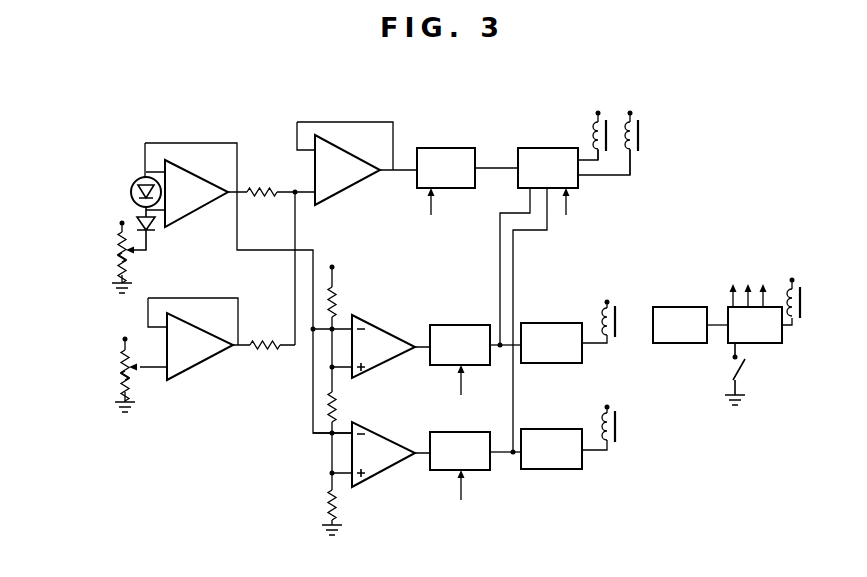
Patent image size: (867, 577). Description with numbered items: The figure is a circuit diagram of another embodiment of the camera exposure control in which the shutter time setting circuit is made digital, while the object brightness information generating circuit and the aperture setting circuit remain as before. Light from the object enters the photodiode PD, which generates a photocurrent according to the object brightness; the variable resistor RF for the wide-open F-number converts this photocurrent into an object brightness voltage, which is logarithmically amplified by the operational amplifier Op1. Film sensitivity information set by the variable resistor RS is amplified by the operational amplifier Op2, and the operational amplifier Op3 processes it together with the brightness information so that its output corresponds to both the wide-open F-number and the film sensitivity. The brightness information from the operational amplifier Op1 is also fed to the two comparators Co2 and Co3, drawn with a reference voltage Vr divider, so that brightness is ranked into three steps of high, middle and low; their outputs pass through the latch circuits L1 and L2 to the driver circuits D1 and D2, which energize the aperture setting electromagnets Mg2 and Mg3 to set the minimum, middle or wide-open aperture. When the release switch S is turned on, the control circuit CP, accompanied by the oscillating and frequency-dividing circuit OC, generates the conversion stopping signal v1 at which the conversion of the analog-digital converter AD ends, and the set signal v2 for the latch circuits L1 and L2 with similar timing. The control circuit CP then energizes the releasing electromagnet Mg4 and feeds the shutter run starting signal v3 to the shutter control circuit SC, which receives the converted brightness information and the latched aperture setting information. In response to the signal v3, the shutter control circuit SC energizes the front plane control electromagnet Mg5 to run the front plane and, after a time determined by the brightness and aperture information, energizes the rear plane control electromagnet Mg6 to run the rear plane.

The photodiode PD is at (131, 192).
The variable resistor for wide-open F-number RF is at (112, 257).
The operational amplifier Op1 is at (248, 288).
The operational amplifier Op2 is at (217, 286).
The operational amplifier Op3 is at (357, 163).
The variable resistor for film sensitivity RS is at (113, 375).
The reference voltage Vr is at (332, 390).
The comparator Co2 is at (391, 346).
The comparator Co3 is at (391, 454).
The analog-digital converter AD is at (467, 168).
The shutter control circuit SC is at (564, 301).
The latch circuit L1 is at (475, 345).
The latch circuit L2 is at (475, 451).
The driver circuit D1 is at (564, 343).
The driver circuit D2 is at (564, 449).
The electromagnet for setting the aperture Mg2 is at (603, 308).
The electromagnet for setting the aperture Mg3 is at (603, 413).
The releasing electromagnet Mg4 is at (791, 281).
The front plane control electromagnet Mg5 is at (592, 126).
The rear plane control electromagnet Mg6 is at (637, 133).
The oscillating and frequency-dividing circuit OC is at (690, 325).
The control circuit CP is at (760, 325).
The release switch S is at (742, 374).
The conversion stopping signal v1 is at (579, 247).
The set signal v2 is at (603, 394).
The shutter run starting signal v3 is at (667, 247).